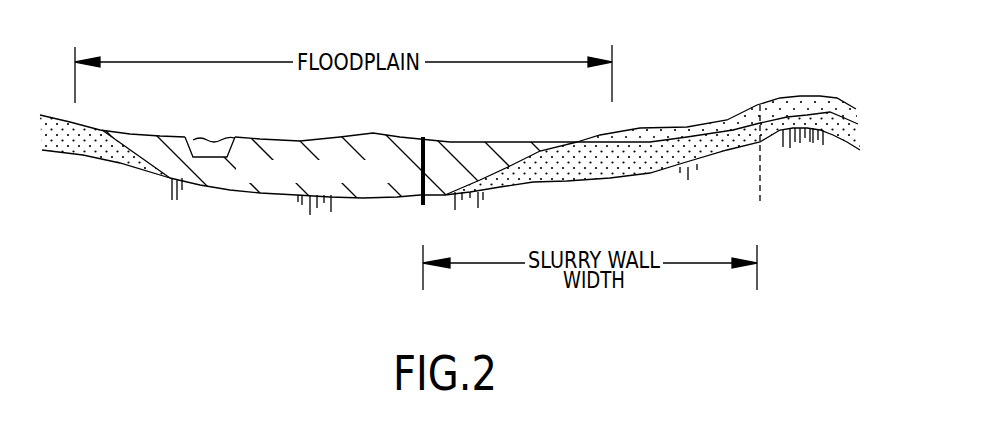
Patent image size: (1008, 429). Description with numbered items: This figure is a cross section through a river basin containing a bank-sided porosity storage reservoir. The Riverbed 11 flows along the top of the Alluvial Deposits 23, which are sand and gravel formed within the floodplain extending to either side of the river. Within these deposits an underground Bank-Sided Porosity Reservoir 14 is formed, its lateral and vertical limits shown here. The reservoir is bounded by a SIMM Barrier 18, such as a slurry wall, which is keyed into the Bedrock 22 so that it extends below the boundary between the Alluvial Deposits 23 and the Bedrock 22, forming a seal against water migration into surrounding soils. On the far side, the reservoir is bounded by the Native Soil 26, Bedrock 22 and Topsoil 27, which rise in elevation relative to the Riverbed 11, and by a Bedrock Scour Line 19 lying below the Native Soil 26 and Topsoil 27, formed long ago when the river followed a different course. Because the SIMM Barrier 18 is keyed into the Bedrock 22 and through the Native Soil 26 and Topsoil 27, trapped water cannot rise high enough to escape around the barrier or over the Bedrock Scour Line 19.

The riverbed 11 is at (197, 153).
The bank-sided porosity reservoir 14 is at (473, 170).
The SIMM barrier 18 is at (422, 206).
The bedrock scour line 19 is at (800, 190).
The bedrock 22 is at (182, 188).
The alluvial deposits 23 is at (343, 196).
The native soil 26 is at (96, 174).
The topsoil 27 is at (800, 48).